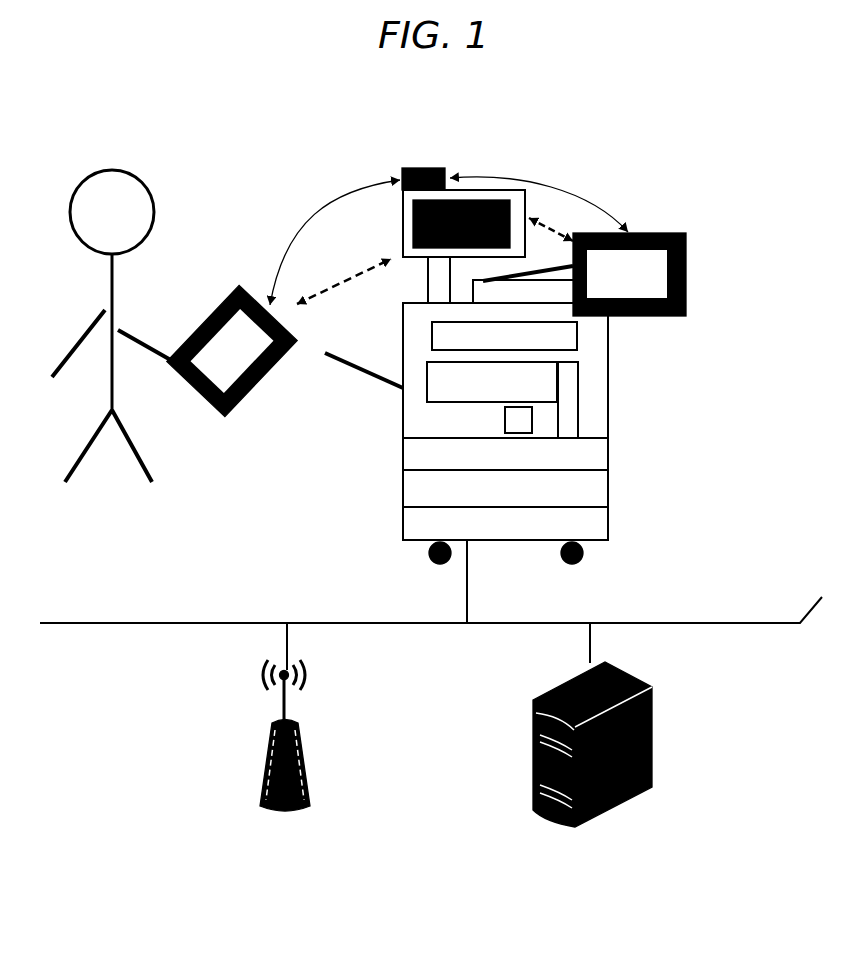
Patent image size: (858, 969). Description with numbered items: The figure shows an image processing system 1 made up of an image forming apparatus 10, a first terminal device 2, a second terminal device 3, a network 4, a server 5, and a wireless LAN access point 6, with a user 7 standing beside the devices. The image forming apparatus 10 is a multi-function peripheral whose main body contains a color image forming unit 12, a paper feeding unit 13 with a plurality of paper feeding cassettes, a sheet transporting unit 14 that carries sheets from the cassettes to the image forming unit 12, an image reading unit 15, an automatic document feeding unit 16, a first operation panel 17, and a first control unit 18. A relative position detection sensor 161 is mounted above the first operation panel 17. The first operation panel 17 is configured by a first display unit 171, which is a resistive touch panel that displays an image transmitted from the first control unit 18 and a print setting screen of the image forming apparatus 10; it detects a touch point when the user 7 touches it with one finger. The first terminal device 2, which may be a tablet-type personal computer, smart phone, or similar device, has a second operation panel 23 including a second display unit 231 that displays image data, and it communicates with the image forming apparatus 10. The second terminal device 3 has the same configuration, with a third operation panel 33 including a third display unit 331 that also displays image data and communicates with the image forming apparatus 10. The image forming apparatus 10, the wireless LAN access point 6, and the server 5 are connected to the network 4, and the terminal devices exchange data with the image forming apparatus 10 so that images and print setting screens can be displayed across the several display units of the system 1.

The image processing system 1 is at (717, 158).
The first terminal device 2 is at (226, 357).
The second operation panel 23 is at (232, 351).
The second display unit 231 is at (222, 312).
The second terminal device 3 is at (671, 249).
The third operation panel 33 is at (688, 258).
The third display unit 331 is at (668, 233).
The network 4 is at (438, 597).
The server 5 is at (652, 730).
The wireless LAN access point 6 is at (300, 752).
The user 7 is at (118, 176).
The image forming apparatus 10 is at (515, 449).
The image forming unit 12 is at (428, 393).
The paper feeding unit 13 is at (566, 473).
The sheet transporting unit 14 is at (580, 386).
The image reading unit 15 is at (577, 347).
The automatic document feeding unit 16 is at (543, 280).
The relative position detection sensor 161 is at (423, 170).
The first operation panel 17 is at (443, 187).
The first display unit 171 is at (415, 216).
The first control unit 18 is at (505, 426).